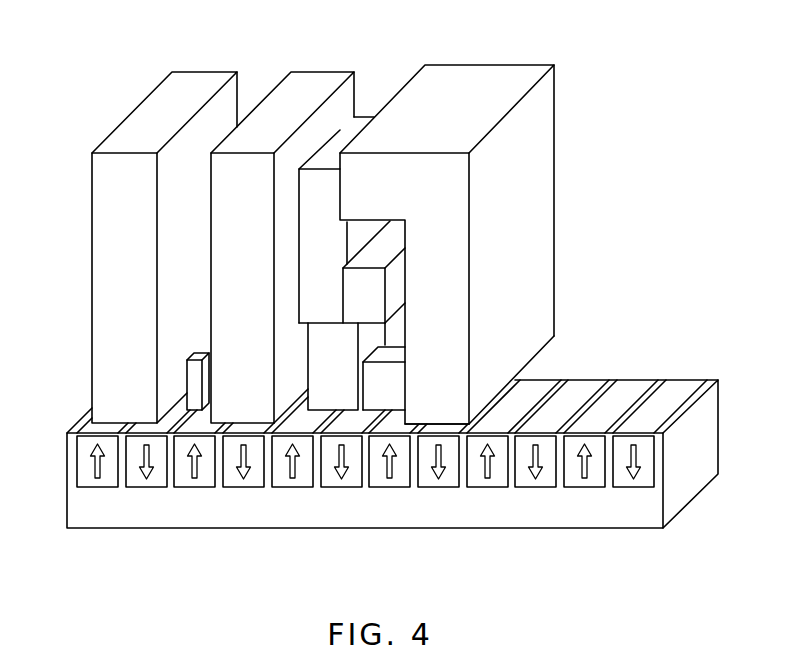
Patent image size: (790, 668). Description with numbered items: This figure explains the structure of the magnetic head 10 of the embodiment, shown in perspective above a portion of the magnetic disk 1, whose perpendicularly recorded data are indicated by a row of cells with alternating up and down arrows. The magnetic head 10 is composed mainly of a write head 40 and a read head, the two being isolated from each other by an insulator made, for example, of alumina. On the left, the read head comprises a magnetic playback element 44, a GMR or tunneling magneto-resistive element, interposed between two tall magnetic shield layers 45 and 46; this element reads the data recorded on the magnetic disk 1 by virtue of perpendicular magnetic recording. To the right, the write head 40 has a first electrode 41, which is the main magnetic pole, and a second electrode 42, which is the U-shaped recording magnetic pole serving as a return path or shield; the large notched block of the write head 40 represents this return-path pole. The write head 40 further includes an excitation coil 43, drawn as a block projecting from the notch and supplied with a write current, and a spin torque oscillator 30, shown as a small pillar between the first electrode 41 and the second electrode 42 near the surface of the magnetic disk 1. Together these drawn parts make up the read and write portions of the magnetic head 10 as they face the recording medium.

The magnetic disk 1 is at (400, 513).
The magnetic head 10 is at (617, 93).
The spin torque oscillator (STO) 30 is at (378, 398).
The write head 40 is at (575, 175).
The first electrode 41 is at (328, 398).
The second electrode 42 is at (458, 410).
The excitation coil 43 is at (372, 293).
The magnetic playback element 44 is at (193, 397).
The magnetic shield layer 45 is at (100, 295).
The magnetic shield layer 46 is at (318, 80).